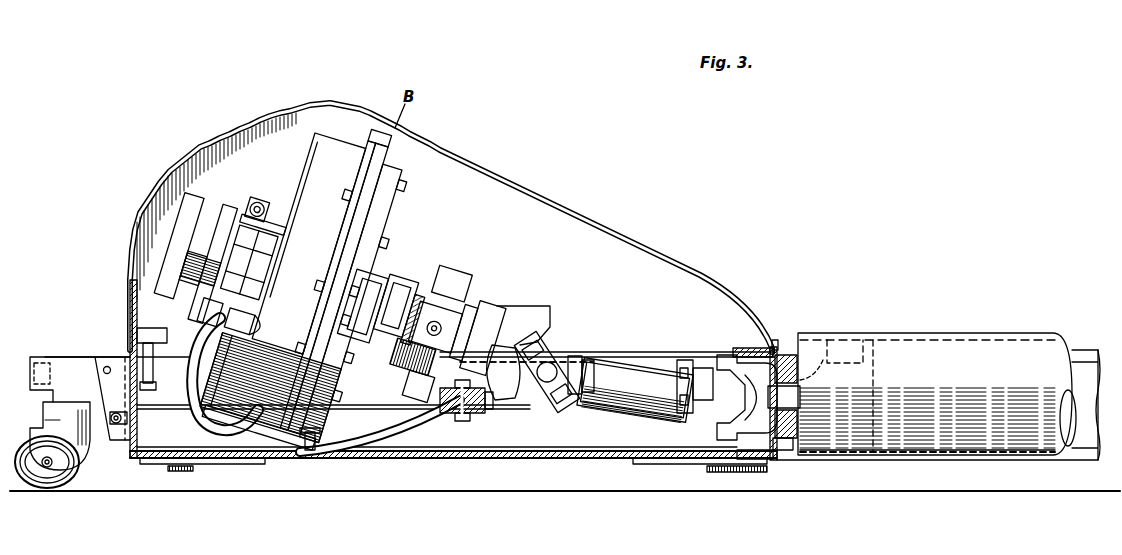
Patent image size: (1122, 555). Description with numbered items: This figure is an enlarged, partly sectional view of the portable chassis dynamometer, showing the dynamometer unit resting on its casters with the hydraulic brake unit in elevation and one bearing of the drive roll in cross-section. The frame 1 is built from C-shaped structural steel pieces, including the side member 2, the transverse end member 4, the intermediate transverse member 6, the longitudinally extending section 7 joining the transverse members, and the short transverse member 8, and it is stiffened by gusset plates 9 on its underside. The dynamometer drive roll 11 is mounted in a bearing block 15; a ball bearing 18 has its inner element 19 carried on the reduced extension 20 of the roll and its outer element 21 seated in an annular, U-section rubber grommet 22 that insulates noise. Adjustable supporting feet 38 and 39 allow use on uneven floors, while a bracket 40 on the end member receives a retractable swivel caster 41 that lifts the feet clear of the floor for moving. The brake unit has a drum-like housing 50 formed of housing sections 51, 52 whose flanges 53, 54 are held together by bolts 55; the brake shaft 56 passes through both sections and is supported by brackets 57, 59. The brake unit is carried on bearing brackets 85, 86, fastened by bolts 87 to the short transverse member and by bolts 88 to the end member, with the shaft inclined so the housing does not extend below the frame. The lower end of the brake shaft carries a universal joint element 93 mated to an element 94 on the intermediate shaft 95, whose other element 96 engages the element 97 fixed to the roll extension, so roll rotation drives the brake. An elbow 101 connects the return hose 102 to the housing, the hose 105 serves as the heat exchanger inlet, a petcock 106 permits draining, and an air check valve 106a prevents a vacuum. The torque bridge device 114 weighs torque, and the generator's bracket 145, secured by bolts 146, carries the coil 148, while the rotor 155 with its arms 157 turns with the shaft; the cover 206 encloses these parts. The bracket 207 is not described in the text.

The portable chassis dynamometer frame 1 is at (1085, 352).
The side member 2 is at (1085, 460).
The transverse end member 4 is at (128, 462).
The intermediate transverse member 6 is at (752, 450).
The longitudinally extending section 7 is at (593, 410).
The short transverse member 8 is at (493, 399).
The gusset plate 9 is at (255, 463).
The dynamometer drive roll 11 is at (1040, 445).
The bearing block 15 is at (778, 340).
The ball bearing 18 is at (790, 355).
The inner element 19 is at (822, 360).
The reduced extension 20 is at (800, 398).
The outer element 21 is at (800, 420).
The rubber grommet 22 is at (790, 452).
The adjustable supporting foot 38 is at (733, 472).
The adjustable supporting foot 39 is at (190, 471).
The bracket 40 is at (118, 437).
The caster 41 is at (76, 466).
The housing 50 is at (366, 308).
The housing section 51 is at (312, 231).
The housing section 52 is at (357, 294).
The flange 53 is at (375, 110).
The flange 54 is at (363, 296).
The bolt 55 is at (324, 267).
The brake shaft 56 is at (489, 337).
The bracket 57 is at (230, 251).
The bracket 59 is at (370, 286).
The bearing bracket 85 is at (540, 300).
The bearing bracket 86 is at (187, 237).
The bolt 87 is at (470, 420).
The bolt 88 is at (137, 330).
The universal joint element 93 is at (555, 340).
The universal joint element 94 is at (580, 356).
The intermediate shaft 95 is at (630, 364).
The universal joint element 96 is at (690, 360).
The universal joint element 97 is at (725, 355).
The elbow 101 is at (252, 318).
The hose 102 is at (192, 382).
The hose 105 is at (395, 432).
The petcock 106 is at (313, 452).
The air check valve 106a is at (262, 196).
The torque bridge device 114 is at (192, 305).
The bracket 145 is at (454, 309).
The bolt 146 is at (418, 272).
The coil 148 is at (387, 367).
The rotor 155 is at (472, 270).
The arm 157 is at (396, 389).
The cover 206 is at (600, 222).
The bracket 207 is at (750, 348).